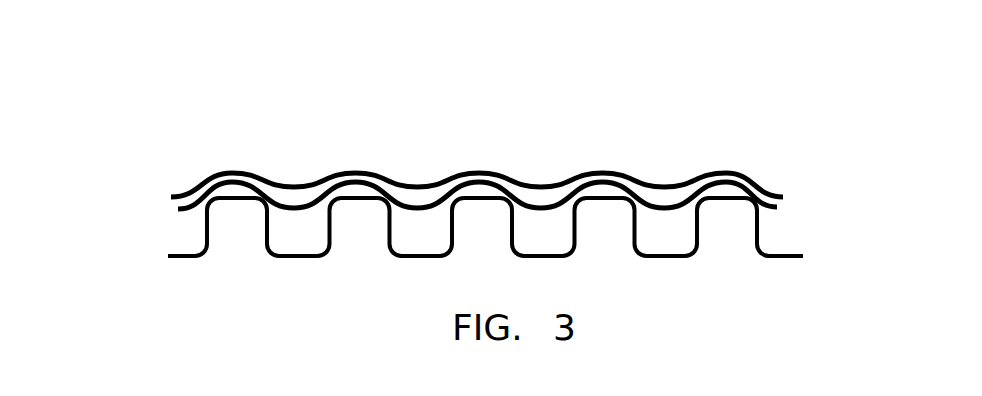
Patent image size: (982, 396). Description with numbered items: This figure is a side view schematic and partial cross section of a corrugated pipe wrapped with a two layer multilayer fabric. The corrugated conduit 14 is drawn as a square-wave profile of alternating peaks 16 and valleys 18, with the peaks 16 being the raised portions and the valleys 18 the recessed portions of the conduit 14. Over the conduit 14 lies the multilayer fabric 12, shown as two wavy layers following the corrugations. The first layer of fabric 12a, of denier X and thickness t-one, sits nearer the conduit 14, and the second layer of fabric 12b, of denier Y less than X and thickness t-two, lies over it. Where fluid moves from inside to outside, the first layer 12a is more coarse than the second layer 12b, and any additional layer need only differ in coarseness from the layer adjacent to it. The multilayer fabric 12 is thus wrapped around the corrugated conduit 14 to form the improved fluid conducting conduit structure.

The multilayer fabric 12 is at (477, 153).
The first layer of fabric 12a is at (415, 205).
The second layer of fabric 12b is at (525, 182).
The corrugated conduit 14 is at (427, 221).
The peaks 16 is at (237, 197).
The valleys 18 is at (309, 257).